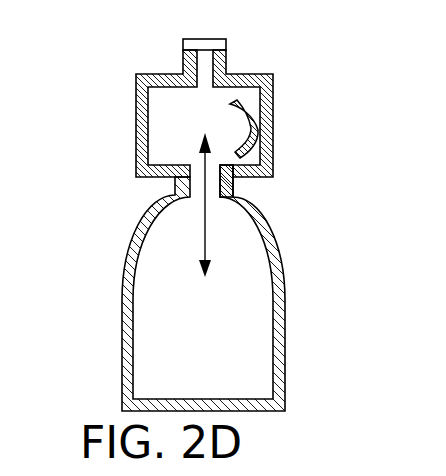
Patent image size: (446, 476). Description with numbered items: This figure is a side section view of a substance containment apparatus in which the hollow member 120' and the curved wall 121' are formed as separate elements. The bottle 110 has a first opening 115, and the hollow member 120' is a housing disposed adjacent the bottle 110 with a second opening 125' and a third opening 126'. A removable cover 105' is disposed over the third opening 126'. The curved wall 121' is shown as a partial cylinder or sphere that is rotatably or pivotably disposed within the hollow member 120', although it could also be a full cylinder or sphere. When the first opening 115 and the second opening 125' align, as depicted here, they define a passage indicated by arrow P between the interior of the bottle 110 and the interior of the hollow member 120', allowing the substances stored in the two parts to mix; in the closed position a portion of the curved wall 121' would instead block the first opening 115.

The bottle 110 is at (84, 345).
The first opening 115 is at (213, 172).
The hollow member 120' is at (165, 113).
The removable cover 105' is at (170, 32).
The third opening 126' is at (254, 54).
The curved wall 121' is at (295, 129).
The second opening 125' is at (300, 176).
The passage P is at (203, 238).